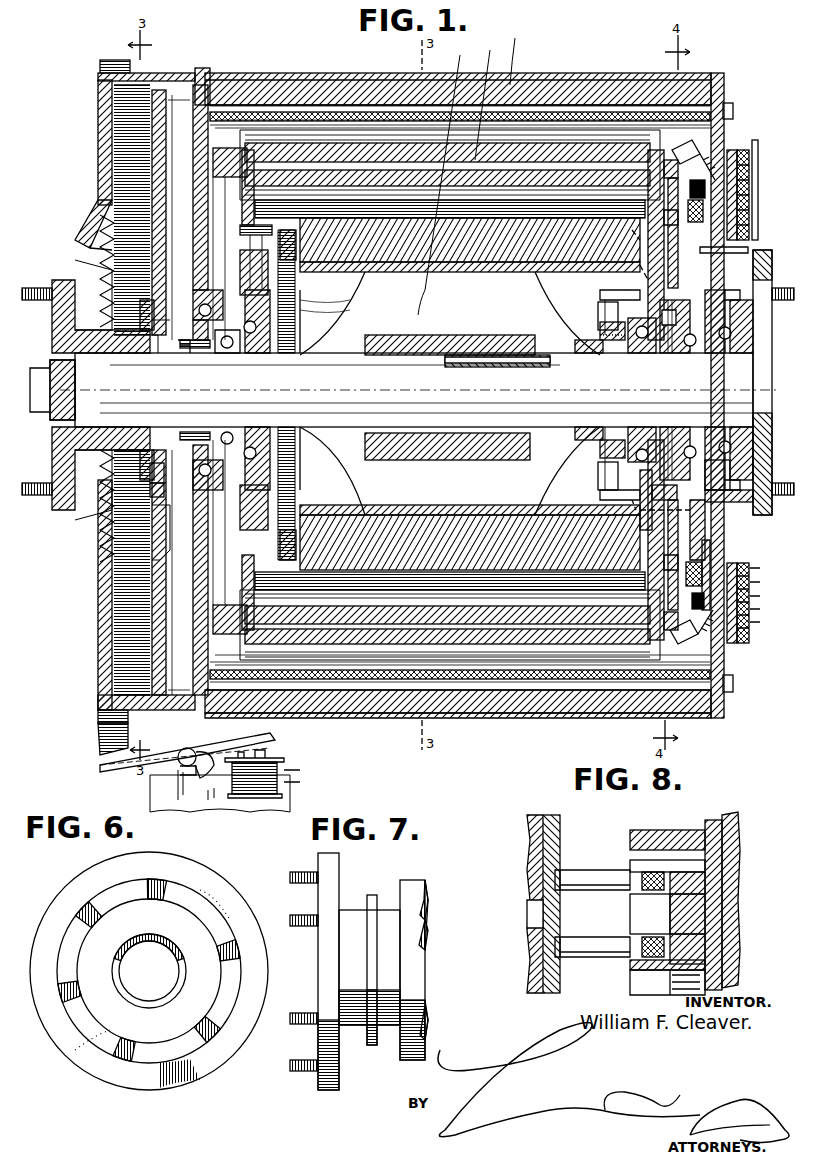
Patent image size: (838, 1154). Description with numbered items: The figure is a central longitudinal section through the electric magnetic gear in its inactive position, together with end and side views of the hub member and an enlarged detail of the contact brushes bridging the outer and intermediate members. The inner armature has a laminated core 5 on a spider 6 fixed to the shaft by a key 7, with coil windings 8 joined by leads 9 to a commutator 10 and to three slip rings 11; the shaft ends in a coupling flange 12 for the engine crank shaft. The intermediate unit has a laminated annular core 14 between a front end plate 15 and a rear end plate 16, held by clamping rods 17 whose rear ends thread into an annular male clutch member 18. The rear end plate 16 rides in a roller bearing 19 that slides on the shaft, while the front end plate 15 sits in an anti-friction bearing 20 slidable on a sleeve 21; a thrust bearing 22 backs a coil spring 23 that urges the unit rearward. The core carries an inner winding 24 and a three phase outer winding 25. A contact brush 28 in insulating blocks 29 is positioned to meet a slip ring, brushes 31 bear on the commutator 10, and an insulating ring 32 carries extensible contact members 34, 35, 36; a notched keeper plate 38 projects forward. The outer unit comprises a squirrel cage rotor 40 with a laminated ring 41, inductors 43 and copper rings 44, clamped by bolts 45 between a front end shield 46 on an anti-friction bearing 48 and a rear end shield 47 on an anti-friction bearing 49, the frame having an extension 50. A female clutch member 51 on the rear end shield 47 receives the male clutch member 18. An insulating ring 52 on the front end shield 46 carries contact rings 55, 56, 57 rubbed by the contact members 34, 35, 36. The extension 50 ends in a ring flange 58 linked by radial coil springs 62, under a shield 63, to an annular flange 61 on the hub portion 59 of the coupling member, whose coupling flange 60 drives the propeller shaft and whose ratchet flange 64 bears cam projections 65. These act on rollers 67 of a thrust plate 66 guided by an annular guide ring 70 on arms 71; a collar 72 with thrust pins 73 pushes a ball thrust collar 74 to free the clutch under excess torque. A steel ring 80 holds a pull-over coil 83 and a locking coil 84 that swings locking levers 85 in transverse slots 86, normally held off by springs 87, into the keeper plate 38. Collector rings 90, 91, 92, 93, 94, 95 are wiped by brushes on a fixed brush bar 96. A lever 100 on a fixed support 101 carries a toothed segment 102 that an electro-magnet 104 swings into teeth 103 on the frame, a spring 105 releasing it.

In FIG. 1, the laminated core 5 is at (432, 545).
In FIG. 1, the spider 6 is at (364, 490).
In FIG. 1, the key 7 is at (478, 357).
In FIG. 1, the coil windings 8 is at (290, 573).
In FIG. 1, the leads 9 is at (598, 290).
In FIG. 1, the commutator 10 is at (592, 355).
In FIG. 1, the slip rings 11 is at (280, 545).
In FIG. 1, the coupling flange 12 is at (770, 375).
In FIG. 1, the laminated annular core 14 is at (538, 150).
In FIG. 1, the front end plate 15 is at (644, 258).
In FIG. 8, the front end plate 15 is at (527, 860).
In FIG. 1, the rear end plate 16 is at (278, 528).
In FIG. 1, the clamping rods 17 is at (352, 160).
In FIG. 1, the annular male clutch member 18 is at (210, 550).
In FIG. 1, the roller bearing 19 is at (275, 350).
In FIG. 1, the anti-friction bearing 20 is at (618, 355).
In FIG. 1, the sleeve 21 is at (675, 440).
In FIG. 1, the anti-friction thrust bearing 22 is at (690, 356).
In FIG. 1, the coil spring 23 is at (645, 355).
In FIG. 1, the inner winding 24 is at (648, 200).
In FIG. 1, the outer winding 25 is at (605, 135).
In FIG. 1, the contact brush 28 is at (262, 228).
In FIG. 1, the insulating blocks 29 is at (266, 275).
In FIG. 1, the brushes 31 is at (609, 396).
In FIG. 8, the insulating ring 32 is at (550, 815).
In FIG. 8, the contact member 34 is at (588, 890).
In FIG. 1, the contact member 35 is at (648, 510).
In FIG. 8, the contact member 36 is at (588, 957).
In FIG. 1, the keeper plate 38 is at (748, 251).
In FIG. 1, the squirrel cage rotor 40 is at (268, 80).
In FIG. 1, the laminated ring 41 is at (315, 80).
In FIG. 1, the inductors 43 is at (470, 700).
In FIG. 1, the copper rings 44 is at (204, 80).
In FIG. 1, the clamping bolts 45 is at (526, 712).
In FIG. 1, the front end shield 46 is at (725, 130).
In FIG. 8, the front end shield 46 is at (740, 830).
In FIG. 1, the rear end shield 47 is at (165, 120).
In FIG. 1, the anti-friction bearing 48 is at (722, 356).
In FIG. 1, the anti-friction bearing 49 is at (208, 348).
In FIG. 1, the frame extension 50 is at (98, 115).
In FIG. 1, the annular female clutch member 51 is at (200, 575).
In FIG. 8, the insulating ring 52 is at (712, 820).
In FIG. 1, the contact ring 55 is at (728, 500).
In FIG. 8, the contact ring 55 is at (705, 878).
In FIG. 1, the contact ring 56 is at (740, 490).
In FIG. 8, the contact ring 56 is at (705, 915).
In FIG. 1, the contact ring 57 is at (760, 455).
In FIG. 8, the contact ring 57 is at (705, 948).
In FIG. 1, the ring flange 58 is at (98, 665).
In FIG. 1, the hub portion 59 is at (55, 438).
In FIG. 7, the hub portion 59 is at (352, 1025).
In FIG. 1, the coupling flange 60 is at (52, 278).
In FIG. 6, the coupling flange 60 is at (70, 893).
In FIG. 7, the coupling flange 60 is at (318, 968).
In FIG. 1, the annular flange 61 is at (55, 345).
In FIG. 7, the annular flange 61 is at (372, 895).
In FIG. 1, the coil springs 62 is at (98, 255).
In FIG. 1, the shield 63 is at (85, 225).
In FIG. 1, the ratchet flange 64 is at (140, 478).
In FIG. 6, the ratchet flange 64 is at (62, 935).
In FIG. 7, the ratchet flange 64 is at (412, 880).
In FIG. 6, the cam projections 65 is at (130, 1050).
In FIG. 7, the cam projections 65 is at (430, 920).
In FIG. 1, the thrust plate 66 is at (150, 505).
In FIG. 1, the rollers 67 is at (150, 490).
In FIG. 1, the annular guide ring 70 is at (160, 525).
In FIG. 1, the arms 71 is at (160, 630).
In FIG. 1, the collar 72 is at (160, 355).
In FIG. 1, the thrust pins 73 is at (185, 355).
In FIG. 1, the ball thrust collar 74 is at (232, 350).
In FIG. 1, the steel ring 80 is at (708, 555).
In FIG. 1, the energizing coil 83 is at (652, 555).
In FIG. 1, the energizing coil 84 is at (706, 178).
In FIG. 1, the locking levers 85 is at (680, 150).
In FIG. 1, the transverse slots 86 is at (700, 636).
In FIG. 1, the springs 87 is at (712, 160).
In FIG. 1, the collector ring 90 is at (745, 150).
In FIG. 1, the collector ring 91 is at (771, 621).
In FIG. 1, the collector ring 92 is at (771, 608).
In FIG. 1, the collector ring 93 is at (771, 595).
In FIG. 1, the collector ring 94 is at (771, 581).
In FIG. 1, the collector ring 95 is at (765, 590).
In FIG. 1, the fixed brush bar 96 is at (760, 140).
In FIG. 1, the lever 100 is at (200, 752).
In FIG. 1, the fixed support 101 is at (205, 808).
In FIG. 1, the toothed segment 102 is at (98, 740).
In FIG. 1, the teeth 103 is at (110, 60).
In FIG. 1, the electro-magnet 104 is at (255, 795).
In FIG. 1, the spring 105 is at (206, 772).